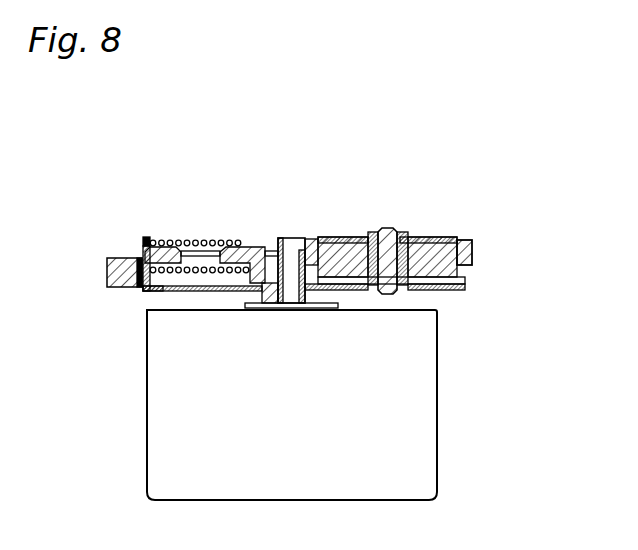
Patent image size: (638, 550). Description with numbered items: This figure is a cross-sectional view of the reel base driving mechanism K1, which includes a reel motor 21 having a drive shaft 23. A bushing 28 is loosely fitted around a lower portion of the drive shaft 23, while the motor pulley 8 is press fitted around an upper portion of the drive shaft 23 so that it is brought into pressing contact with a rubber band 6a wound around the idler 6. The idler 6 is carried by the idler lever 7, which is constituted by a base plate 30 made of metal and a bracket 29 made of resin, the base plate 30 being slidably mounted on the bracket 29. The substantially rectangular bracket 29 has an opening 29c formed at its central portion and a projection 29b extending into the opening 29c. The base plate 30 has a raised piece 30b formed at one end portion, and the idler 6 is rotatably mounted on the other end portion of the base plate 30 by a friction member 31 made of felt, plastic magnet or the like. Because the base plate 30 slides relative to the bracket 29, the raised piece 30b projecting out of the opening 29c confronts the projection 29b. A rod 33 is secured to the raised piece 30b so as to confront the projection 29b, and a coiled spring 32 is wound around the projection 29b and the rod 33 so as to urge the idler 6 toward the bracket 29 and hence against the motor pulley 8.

The idler lever 7 is at (174, 259).
The motor pulley 8 is at (279, 237).
The reel base driving mechanism K1 is at (443, 192).
The idler 6 is at (440, 237).
The rubber band 6a is at (475, 247).
The reel motor 21 is at (420, 426).
The drive shaft 23 is at (298, 236).
The bushing 28 is at (275, 305).
The bracket 29 is at (107, 272).
The projection 29b is at (246, 246).
The opening 29c is at (202, 282).
The base plate 30 is at (182, 292).
The raised piece 30b is at (145, 237).
The friction member 31 is at (470, 283).
The coiled spring 32 is at (202, 242).
The rod 33 is at (152, 292).